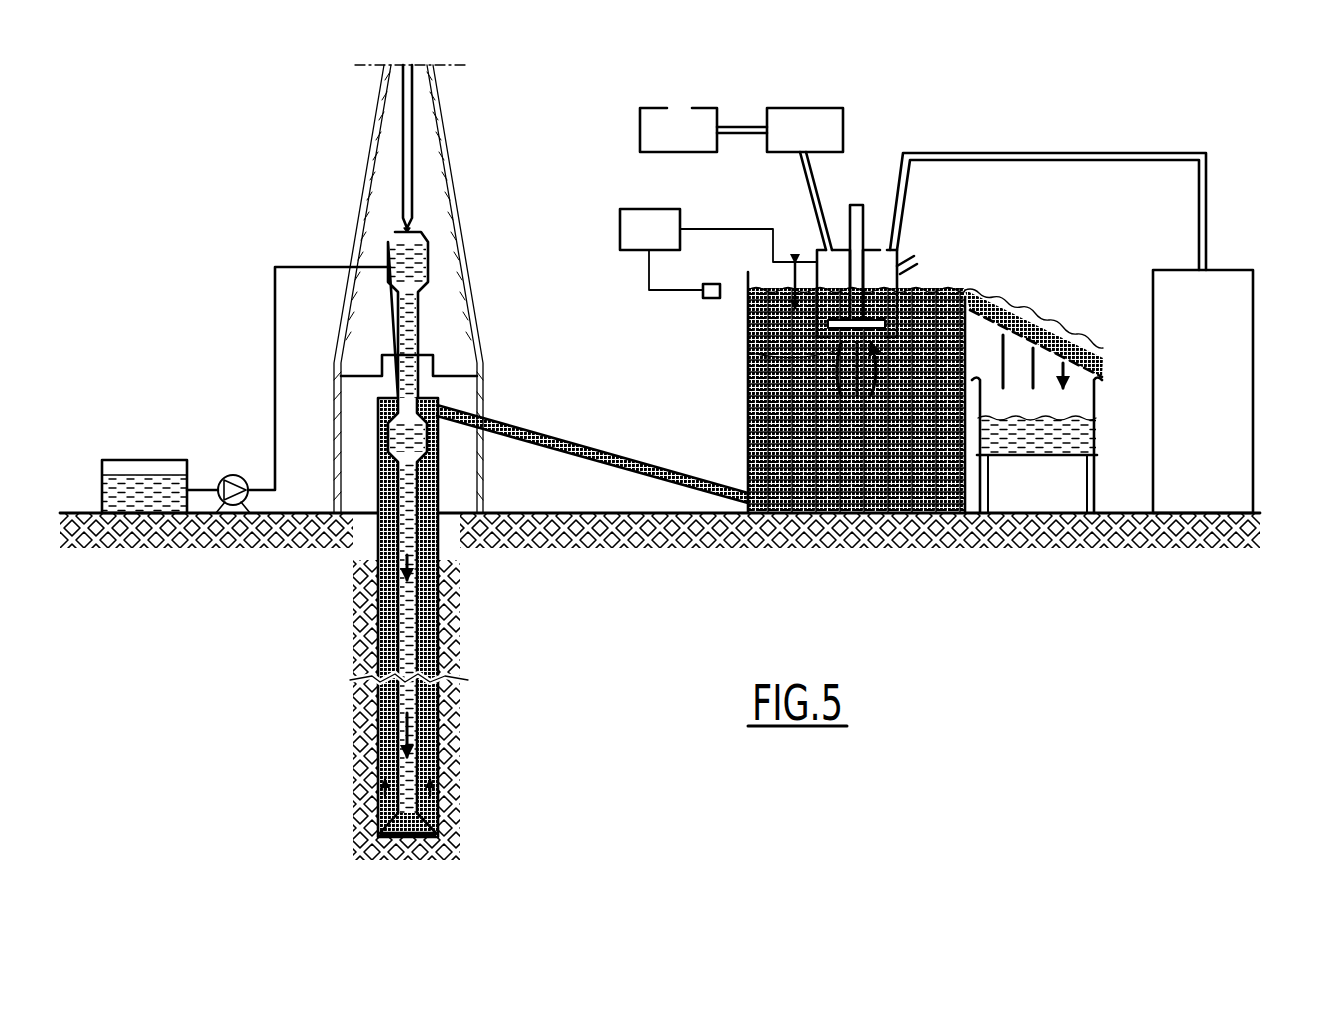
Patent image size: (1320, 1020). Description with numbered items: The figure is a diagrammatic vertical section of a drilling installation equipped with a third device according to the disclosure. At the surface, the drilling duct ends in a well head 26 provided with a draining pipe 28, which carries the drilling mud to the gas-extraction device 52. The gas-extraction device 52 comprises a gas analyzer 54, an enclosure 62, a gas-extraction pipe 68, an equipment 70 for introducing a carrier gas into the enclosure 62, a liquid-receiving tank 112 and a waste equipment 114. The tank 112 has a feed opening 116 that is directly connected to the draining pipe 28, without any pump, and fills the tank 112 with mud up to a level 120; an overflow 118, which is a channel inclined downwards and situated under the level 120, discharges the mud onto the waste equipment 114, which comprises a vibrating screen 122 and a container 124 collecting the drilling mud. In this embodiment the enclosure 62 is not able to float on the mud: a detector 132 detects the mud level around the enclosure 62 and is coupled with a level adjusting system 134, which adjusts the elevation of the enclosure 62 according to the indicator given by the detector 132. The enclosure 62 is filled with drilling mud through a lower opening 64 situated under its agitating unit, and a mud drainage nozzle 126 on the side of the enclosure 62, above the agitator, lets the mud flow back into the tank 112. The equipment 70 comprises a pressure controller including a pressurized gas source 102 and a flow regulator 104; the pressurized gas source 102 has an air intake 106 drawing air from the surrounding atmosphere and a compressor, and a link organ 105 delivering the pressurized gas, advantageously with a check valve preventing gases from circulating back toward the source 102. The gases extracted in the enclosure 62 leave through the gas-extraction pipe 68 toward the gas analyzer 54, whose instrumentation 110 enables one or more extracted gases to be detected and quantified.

The well head 26 is at (452, 386).
The draining pipe 28 is at (612, 462).
The gas-extraction device 52 is at (874, 110).
The gas analyzer 54 is at (1242, 232).
The enclosure 62 is at (816, 250).
The lower opening 64 is at (748, 351).
The gas-extraction pipe 68 is at (905, 185).
The equipment for introducing a carrier gas 70 is at (780, 90).
The pressurized gas source 102 is at (640, 138).
The flow regulator 104 is at (843, 140).
The link organ 105 is at (745, 137).
The air intake 106 is at (679, 102).
The instrumentation 110 is at (1253, 280).
The liquid-receiving tank 112 is at (748, 410).
The waste equipment 114 is at (1110, 400).
The feed opening 116 is at (765, 502).
The overflow 118 is at (968, 292).
The level 120 is at (748, 278).
The vibrating screen 122 is at (1046, 340).
The container 124 is at (1097, 443).
The mud drainage nozzle 126 is at (914, 262).
The detector 132 is at (710, 283).
The level adjusting system 134 is at (620, 228).